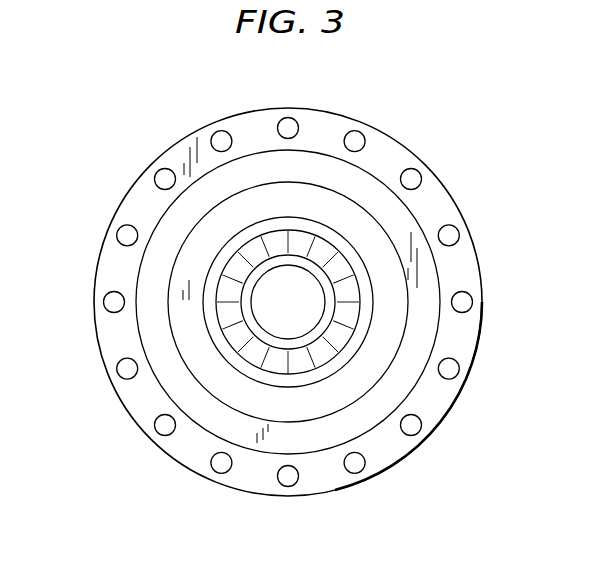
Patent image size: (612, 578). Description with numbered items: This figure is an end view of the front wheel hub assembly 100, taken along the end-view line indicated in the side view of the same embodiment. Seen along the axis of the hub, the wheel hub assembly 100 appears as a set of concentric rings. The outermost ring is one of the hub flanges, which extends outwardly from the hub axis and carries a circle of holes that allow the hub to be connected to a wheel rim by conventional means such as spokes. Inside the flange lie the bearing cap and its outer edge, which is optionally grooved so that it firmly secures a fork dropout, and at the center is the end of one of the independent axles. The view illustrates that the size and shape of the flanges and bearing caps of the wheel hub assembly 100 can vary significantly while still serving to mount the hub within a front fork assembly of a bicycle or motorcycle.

The wheel hub assembly 100 is at (467, 111).